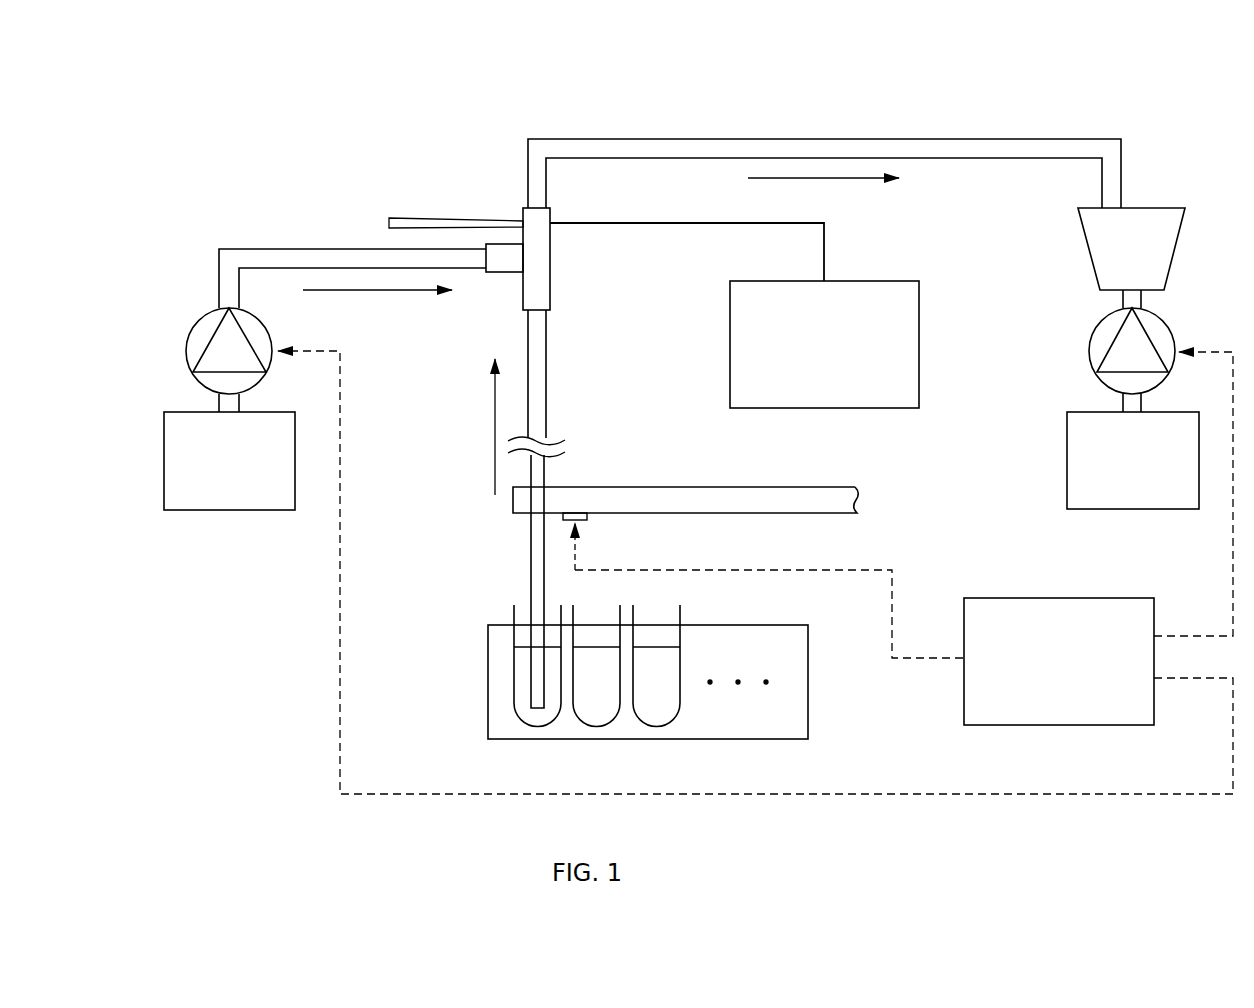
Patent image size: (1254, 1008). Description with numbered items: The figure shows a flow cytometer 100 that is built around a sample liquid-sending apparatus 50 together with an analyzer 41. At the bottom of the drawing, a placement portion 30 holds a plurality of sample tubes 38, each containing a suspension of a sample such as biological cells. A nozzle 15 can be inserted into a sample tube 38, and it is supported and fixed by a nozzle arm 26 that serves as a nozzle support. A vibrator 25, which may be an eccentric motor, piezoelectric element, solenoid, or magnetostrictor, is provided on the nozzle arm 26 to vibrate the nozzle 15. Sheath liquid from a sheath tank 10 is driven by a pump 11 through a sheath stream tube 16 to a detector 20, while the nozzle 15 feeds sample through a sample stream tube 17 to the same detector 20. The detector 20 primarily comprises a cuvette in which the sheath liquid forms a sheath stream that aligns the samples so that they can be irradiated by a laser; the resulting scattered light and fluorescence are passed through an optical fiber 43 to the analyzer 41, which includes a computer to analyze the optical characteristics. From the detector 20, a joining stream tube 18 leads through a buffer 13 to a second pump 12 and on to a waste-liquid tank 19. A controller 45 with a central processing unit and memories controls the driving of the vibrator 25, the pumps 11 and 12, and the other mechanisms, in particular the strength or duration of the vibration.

The flow cytometer 100 is at (348, 89).
The sheath tank 10 is at (163, 454).
The pump 11 is at (188, 333).
The pump 12 is at (1168, 325).
The buffer 13 is at (1177, 243).
The nozzle 15 is at (530, 533).
The sheath stream tube 16 is at (282, 248).
The sample stream tube 17 is at (546, 394).
The joining stream tube 18 is at (861, 138).
The waste-liquid tank 19 is at (1067, 462).
The detector 20 is at (550, 283).
The vibrator 25 is at (588, 517).
The nozzle arm 26 is at (777, 500).
The placement portion 30 is at (488, 687).
The sample tube 38 is at (514, 613).
The analyzer 41 is at (919, 346).
The optical fiber 43 is at (668, 225).
The controller 45 is at (1032, 597).
The sample liquid-sending apparatus 50 is at (427, 578).